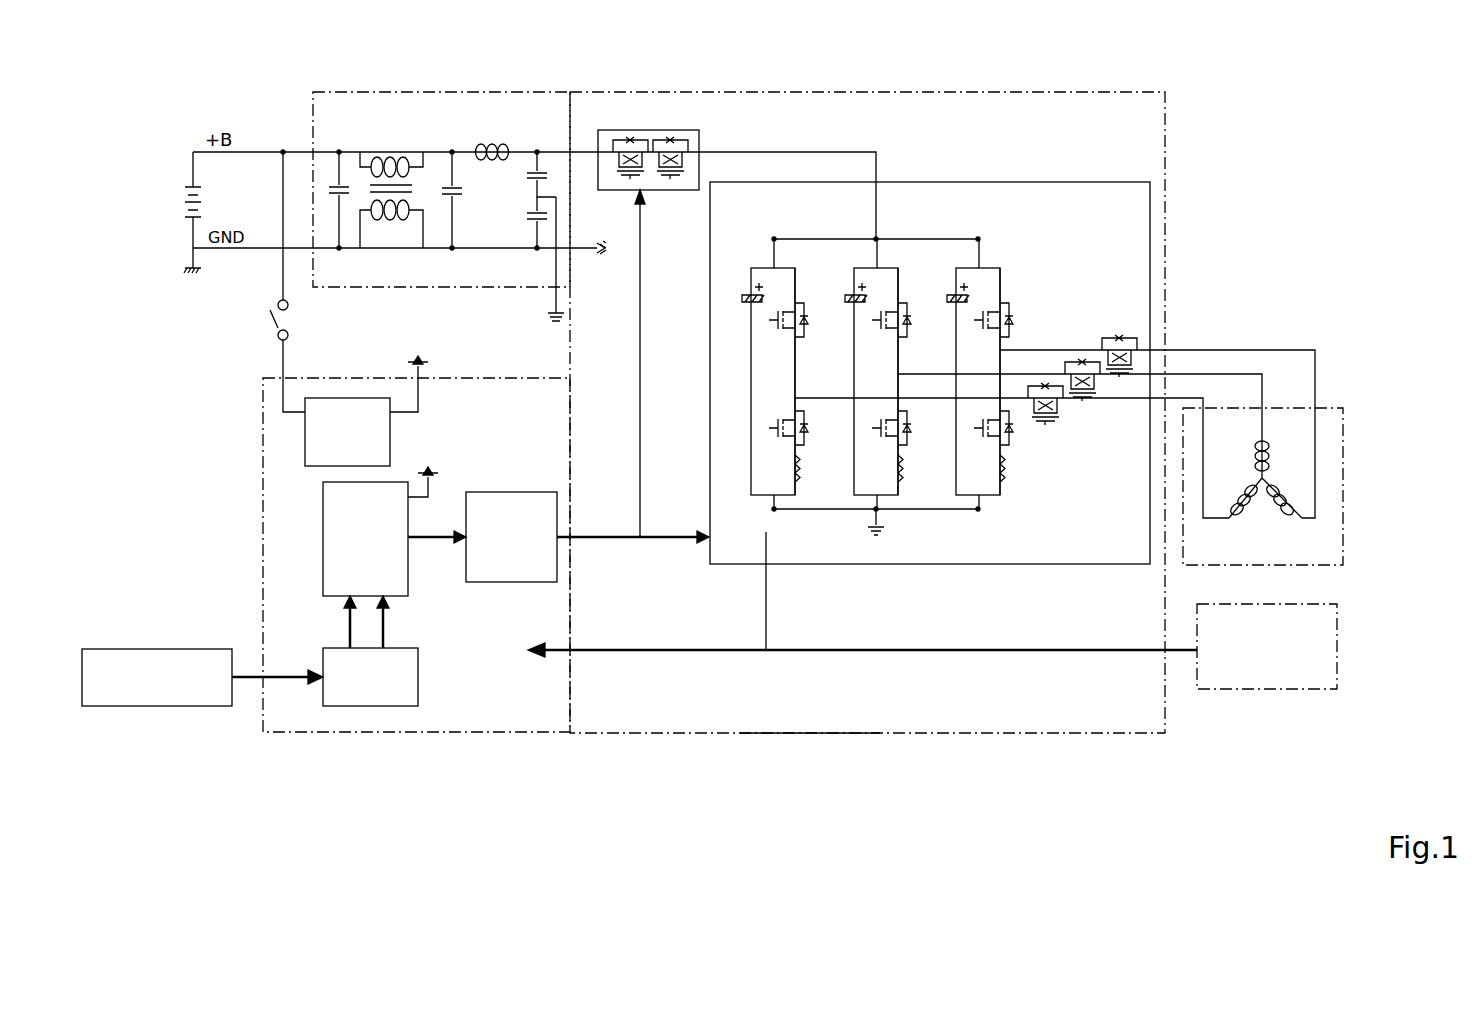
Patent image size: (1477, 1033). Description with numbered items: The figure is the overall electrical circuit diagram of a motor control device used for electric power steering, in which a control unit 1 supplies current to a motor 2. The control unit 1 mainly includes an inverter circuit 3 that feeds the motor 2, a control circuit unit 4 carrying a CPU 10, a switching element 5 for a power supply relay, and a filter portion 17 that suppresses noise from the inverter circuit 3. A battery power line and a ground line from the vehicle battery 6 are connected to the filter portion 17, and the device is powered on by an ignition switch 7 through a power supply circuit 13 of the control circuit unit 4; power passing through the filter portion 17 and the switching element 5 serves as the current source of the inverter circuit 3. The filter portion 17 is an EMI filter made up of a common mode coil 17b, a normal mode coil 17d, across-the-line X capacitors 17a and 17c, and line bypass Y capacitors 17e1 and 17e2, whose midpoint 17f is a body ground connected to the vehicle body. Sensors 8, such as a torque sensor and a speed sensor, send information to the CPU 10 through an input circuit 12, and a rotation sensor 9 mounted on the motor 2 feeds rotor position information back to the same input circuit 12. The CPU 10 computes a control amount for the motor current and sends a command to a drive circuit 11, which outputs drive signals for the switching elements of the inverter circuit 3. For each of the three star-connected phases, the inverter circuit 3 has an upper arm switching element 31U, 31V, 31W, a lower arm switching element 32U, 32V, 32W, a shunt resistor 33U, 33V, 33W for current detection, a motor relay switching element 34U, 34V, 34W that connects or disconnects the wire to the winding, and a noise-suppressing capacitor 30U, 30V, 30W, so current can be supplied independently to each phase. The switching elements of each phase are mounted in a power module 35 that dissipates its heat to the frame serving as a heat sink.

The control unit 1 is at (932, 78).
The motor 2 is at (1295, 395).
The inverter circuit 3 is at (1040, 182).
The control circuit unit 4 is at (465, 733).
The switching element for power supply relay 5 is at (663, 130).
The battery 6 is at (185, 152).
The ignition switch 7 is at (268, 332).
The sensors 8 is at (217, 742).
The rotation sensor 9 is at (1245, 692).
The CPU 10 is at (323, 540).
The drive circuit 11 is at (527, 582).
The input circuit 12 is at (353, 706).
The power supply circuit 13 is at (305, 435).
The filter portion 17 is at (545, 100).
The capacitor 17a is at (333, 185).
The common mode coil 17b is at (375, 165).
The capacitor 17c is at (445, 185).
The normal mode coil 17d is at (483, 144).
The capacitor 17e1 is at (532, 165).
The capacitor 17e2 is at (527, 225).
The midpoint 17f is at (548, 318).
The capacitor 30U is at (748, 295).
The capacitor 30V is at (852, 302).
The capacitor 30W is at (954, 302).
The switching element for upper arm 31U is at (805, 318).
The switching element for upper arm 31V is at (908, 318).
The switching element for upper arm 31W is at (1010, 318).
The switching element for lower arm 32U is at (805, 438).
The switching element for lower arm 32V is at (908, 438).
The switching element for lower arm 32W is at (1010, 438).
The shunt resistor 33U is at (798, 485).
The shunt resistor 33V is at (900, 485).
The shunt resistor 33W is at (1000, 485).
The switching element for motor relay 34U is at (1045, 415).
The switching element for motor relay 34V is at (1085, 392).
The switching element for motor relay 34W is at (1118, 338).
The power module 35 is at (800, 733).